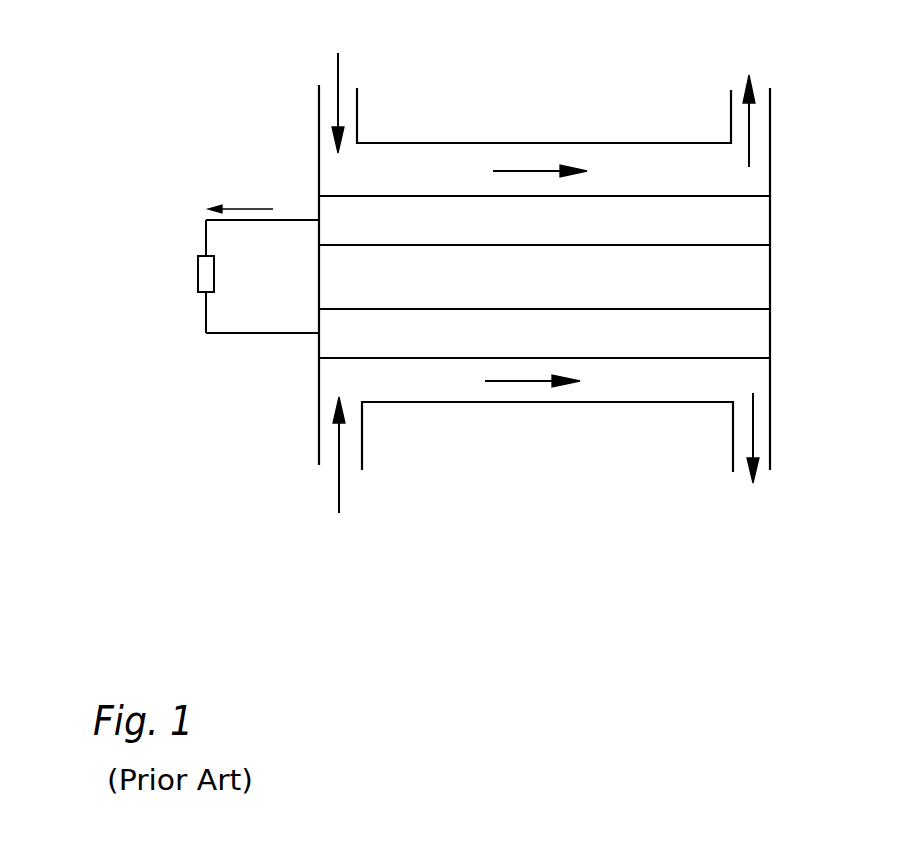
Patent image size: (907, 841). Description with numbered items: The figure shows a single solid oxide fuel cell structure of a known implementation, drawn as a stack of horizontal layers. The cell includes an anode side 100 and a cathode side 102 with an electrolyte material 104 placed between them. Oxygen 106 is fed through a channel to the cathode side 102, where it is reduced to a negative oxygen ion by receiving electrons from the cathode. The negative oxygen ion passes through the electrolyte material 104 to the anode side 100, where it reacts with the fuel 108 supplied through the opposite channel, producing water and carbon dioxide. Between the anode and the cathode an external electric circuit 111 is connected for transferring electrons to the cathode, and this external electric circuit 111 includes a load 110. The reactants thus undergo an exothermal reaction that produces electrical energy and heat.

The anode side 100 is at (742, 215).
The cathode side 102 is at (737, 327).
The electrolyte material 104 is at (745, 272).
The oxygen 106 is at (339, 497).
The fuel 108 is at (338, 73).
The load 110 is at (197, 277).
The external electric circuit 111 is at (185, 208).